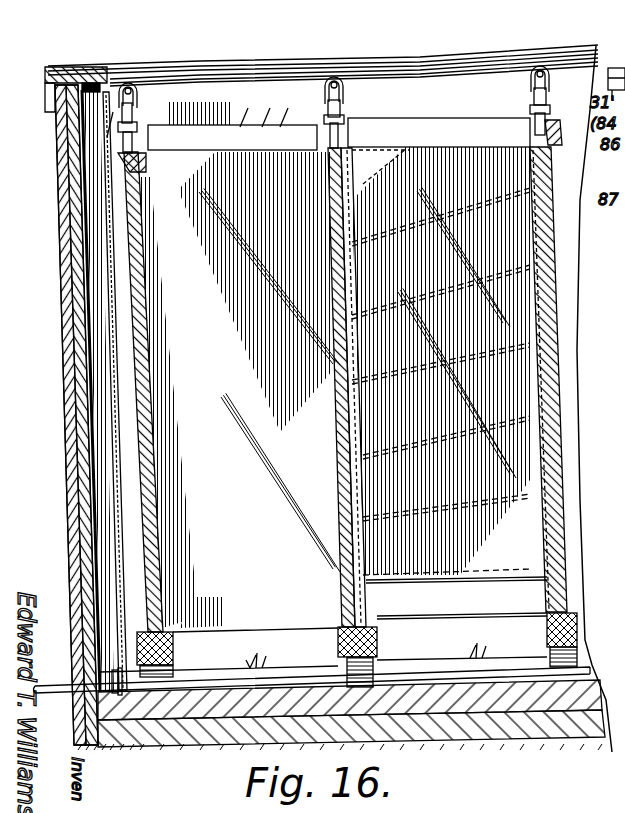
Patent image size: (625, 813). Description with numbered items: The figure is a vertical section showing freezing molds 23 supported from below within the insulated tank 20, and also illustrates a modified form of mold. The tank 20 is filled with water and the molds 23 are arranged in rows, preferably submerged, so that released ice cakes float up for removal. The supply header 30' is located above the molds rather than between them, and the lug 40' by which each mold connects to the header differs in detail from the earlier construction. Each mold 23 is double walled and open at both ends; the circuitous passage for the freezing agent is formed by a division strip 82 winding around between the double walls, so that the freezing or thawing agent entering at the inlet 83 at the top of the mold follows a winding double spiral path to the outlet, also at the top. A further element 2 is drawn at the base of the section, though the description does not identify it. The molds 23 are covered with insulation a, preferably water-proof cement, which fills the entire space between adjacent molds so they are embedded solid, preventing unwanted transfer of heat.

The insulated tank 20 is at (62, 436).
The supply header 30' is at (363, 112).
The inlet 83 is at (360, 146).
The lug 40' is at (457, 365).
The insulation a is at (141, 463).
The freezing mold 23 is at (239, 390).
The division strip 82 is at (557, 331).
The operating rod 2 is at (583, 672).